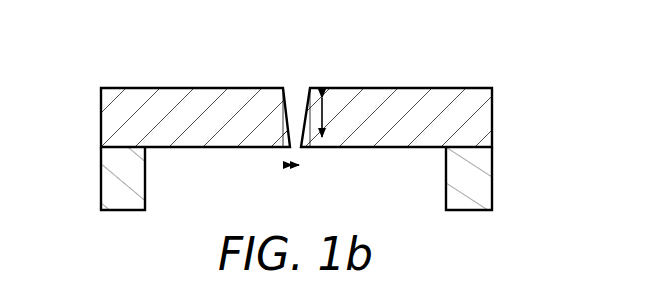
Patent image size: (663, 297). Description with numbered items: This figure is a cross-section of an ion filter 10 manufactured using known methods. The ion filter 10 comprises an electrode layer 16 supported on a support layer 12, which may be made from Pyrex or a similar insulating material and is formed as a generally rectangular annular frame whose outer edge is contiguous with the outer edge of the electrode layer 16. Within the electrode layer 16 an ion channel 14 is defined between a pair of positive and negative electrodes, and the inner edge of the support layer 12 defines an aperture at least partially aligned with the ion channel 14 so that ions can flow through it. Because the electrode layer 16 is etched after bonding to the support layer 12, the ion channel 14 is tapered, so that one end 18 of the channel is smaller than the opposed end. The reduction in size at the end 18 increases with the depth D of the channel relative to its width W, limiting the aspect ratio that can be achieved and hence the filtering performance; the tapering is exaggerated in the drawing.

The ion filter 10 is at (507, 74).
The support layer 12 is at (493, 193).
The ion channel 14 is at (295, 93).
The electrode layer 16 is at (100, 93).
The end of ion channel 18 is at (302, 148).